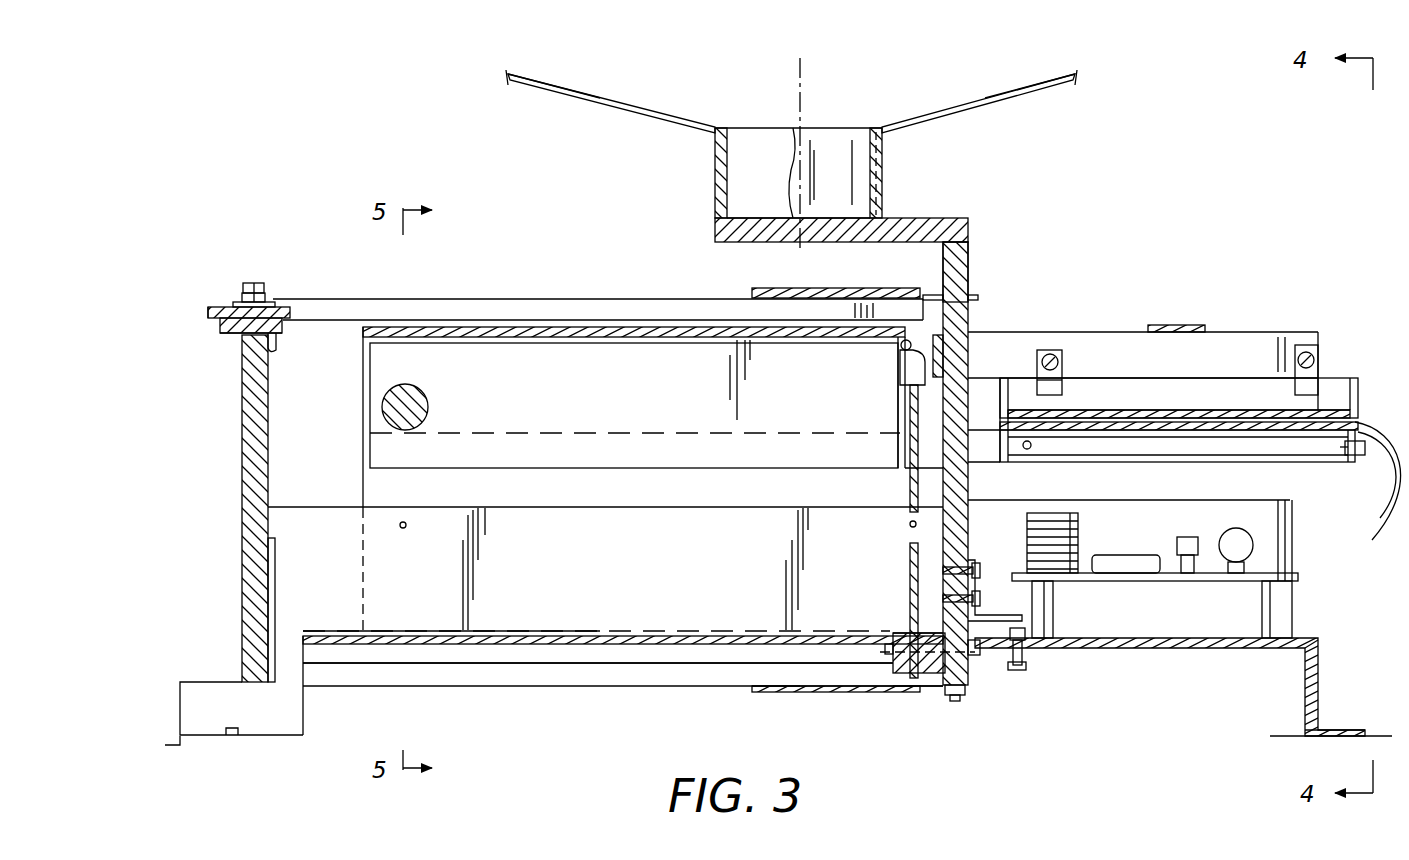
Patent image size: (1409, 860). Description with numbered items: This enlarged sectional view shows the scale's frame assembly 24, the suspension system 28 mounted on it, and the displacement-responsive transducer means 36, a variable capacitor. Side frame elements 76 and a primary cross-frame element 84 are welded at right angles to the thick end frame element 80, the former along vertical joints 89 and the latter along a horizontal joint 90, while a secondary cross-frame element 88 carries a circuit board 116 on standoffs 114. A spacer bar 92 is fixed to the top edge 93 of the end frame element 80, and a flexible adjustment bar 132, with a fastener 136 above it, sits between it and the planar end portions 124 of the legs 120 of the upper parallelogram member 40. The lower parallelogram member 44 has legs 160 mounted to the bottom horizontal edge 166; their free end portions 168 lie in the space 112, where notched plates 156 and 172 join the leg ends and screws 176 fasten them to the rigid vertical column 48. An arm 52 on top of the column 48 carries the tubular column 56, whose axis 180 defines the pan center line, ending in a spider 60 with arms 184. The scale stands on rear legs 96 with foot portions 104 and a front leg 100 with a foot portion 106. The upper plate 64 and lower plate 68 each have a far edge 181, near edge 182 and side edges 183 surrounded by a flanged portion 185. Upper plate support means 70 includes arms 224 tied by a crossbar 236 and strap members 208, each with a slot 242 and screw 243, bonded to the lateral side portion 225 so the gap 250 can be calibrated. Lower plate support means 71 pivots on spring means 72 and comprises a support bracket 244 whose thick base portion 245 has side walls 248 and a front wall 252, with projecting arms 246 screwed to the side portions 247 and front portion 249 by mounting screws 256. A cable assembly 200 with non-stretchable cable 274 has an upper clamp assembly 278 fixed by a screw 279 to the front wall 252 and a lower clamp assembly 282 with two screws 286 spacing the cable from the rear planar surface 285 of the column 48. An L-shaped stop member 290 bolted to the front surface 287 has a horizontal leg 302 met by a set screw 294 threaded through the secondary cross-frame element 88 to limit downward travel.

The frame assembly 24 is at (298, 556).
The suspension system 28 is at (966, 316).
The transducer means 36 is at (1385, 416).
The upper parallelogram member 40 is at (666, 310).
The lower parallelogram member 44 is at (640, 674).
The interconnecting vertical column 48 is at (962, 248).
The arm 52 is at (886, 216).
The tubular column 56 is at (848, 128).
The spider 60 is at (606, 96).
The upper plate 64 is at (1204, 398).
The lower plate 68 is at (1183, 449).
The upper plate support means 70 is at (1143, 355).
The lower plate support means 71 is at (987, 446).
The spring means 72 is at (418, 395).
The side frame elements 76 is at (343, 613).
The end frame element 80 is at (248, 428).
The primary cross-frame element 84 is at (688, 634).
The secondary cross-frame element 88 is at (1192, 648).
The vertically disposed joints 89 is at (270, 524).
The horizontally disposed joint 90 is at (268, 628).
The spacer bar 92 is at (232, 332).
The top edge 93 is at (275, 348).
The rear legs 96 is at (304, 714).
The front leg 100 is at (1319, 670).
The foot portion 104 is at (185, 740).
The foot portion 106 is at (1318, 740).
The space 112 is at (975, 630).
The standoffs 114 is at (1047, 625).
The circuit board 116 is at (1206, 583).
The legs 120 is at (565, 298).
The end portions 124 is at (276, 308).
The flexible adjustment bar 132 is at (222, 308).
The nut 136 is at (256, 283).
The notched plate 156 is at (822, 288).
The legs 160 is at (556, 674).
The bottom horizontal edge 166 is at (232, 686).
The free end portion 168 is at (820, 694).
The notched plate 172 is at (778, 696).
The screws 176 is at (955, 702).
The broken line 180 is at (804, 72).
The far edge 181 is at (1388, 518).
The near edge 182 is at (1010, 402).
The side edges 183 is at (1280, 418).
The arms 184 is at (556, 92).
The flanged portion 185 is at (1323, 395).
The cable assembly 200 is at (907, 572).
The strap members 208 is at (1070, 391).
The arms 224 is at (1240, 332).
The lateral side portion 225 is at (1192, 396).
The crossbar 236 is at (1164, 325).
The slot 242 is at (1050, 352).
The screw 243 is at (1062, 366).
The support bracket 244 is at (588, 442).
The base portion 245 is at (768, 445).
The projecting arms 246 is at (936, 455).
The side portions 247 is at (1165, 452).
The side walls 248 is at (432, 468).
The front portion 249 is at (1346, 448).
The gap 250 is at (1152, 420).
The front wall 252 is at (906, 402).
The mounting screws 256 is at (1033, 448).
The cable 274 is at (910, 432).
The upper clamp assembly 278 is at (906, 368).
The screw 279 is at (898, 348).
The lower clamp assembly 282 is at (932, 662).
The rear planar surface 285 is at (942, 523).
The screws 286 is at (982, 652).
The front surface 287 is at (967, 535).
The stop member 290 is at (1002, 557).
The set screw 294 is at (1026, 654).
The horizontal leg 302 is at (1012, 612).